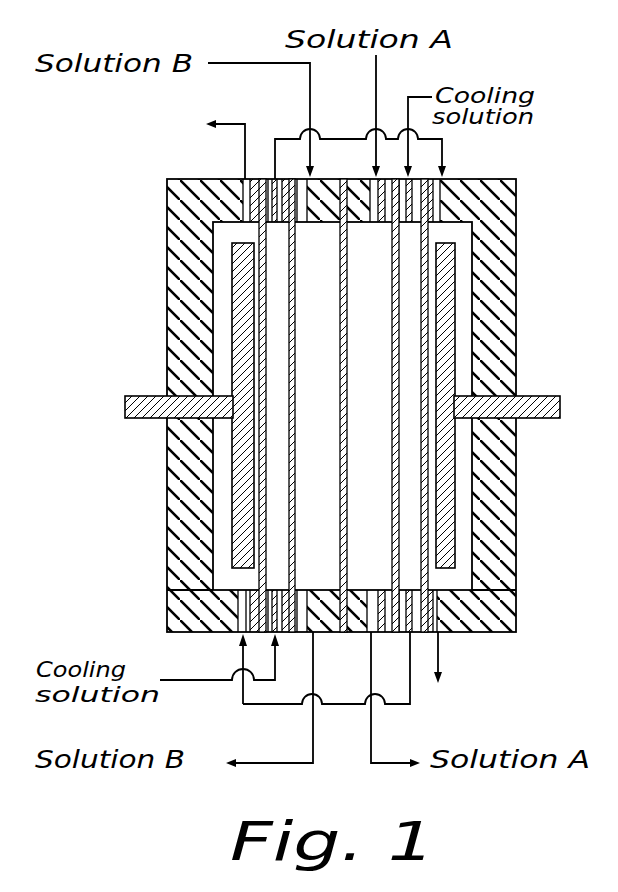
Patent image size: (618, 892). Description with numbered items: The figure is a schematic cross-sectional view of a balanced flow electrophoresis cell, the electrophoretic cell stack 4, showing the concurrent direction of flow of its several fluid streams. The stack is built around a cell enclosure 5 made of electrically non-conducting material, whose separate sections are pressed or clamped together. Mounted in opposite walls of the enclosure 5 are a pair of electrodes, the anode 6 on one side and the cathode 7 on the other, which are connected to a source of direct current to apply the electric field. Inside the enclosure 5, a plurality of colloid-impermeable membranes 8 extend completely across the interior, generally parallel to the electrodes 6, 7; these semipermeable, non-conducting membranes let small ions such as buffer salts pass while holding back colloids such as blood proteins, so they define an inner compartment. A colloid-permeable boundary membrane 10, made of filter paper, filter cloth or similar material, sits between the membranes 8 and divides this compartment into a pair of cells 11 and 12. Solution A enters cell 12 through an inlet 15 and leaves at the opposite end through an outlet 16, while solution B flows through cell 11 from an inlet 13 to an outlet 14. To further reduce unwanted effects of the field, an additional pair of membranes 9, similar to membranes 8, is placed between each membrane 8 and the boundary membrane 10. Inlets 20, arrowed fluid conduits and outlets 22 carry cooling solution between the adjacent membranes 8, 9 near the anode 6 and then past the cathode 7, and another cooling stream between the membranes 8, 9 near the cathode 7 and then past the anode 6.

The electrophoretic cell stack 4 is at (517, 317).
The cell enclosure 5 is at (500, 557).
The anode 6 is at (148, 412).
The cathode 7 is at (545, 418).
The colloid-impermeable membranes 8 is at (262, 480).
The additional pair of membranes 9 is at (295, 520).
The boundary membrane 10 is at (342, 265).
The cell 11 is at (303, 377).
The cell 12 is at (355, 381).
The inlet 13 is at (303, 178).
The outlet 14 is at (370, 636).
The inlet 15 is at (370, 178).
The outlet 16 is at (370, 664).
The inlets 20 is at (440, 180).
The outlets 22 is at (277, 178).